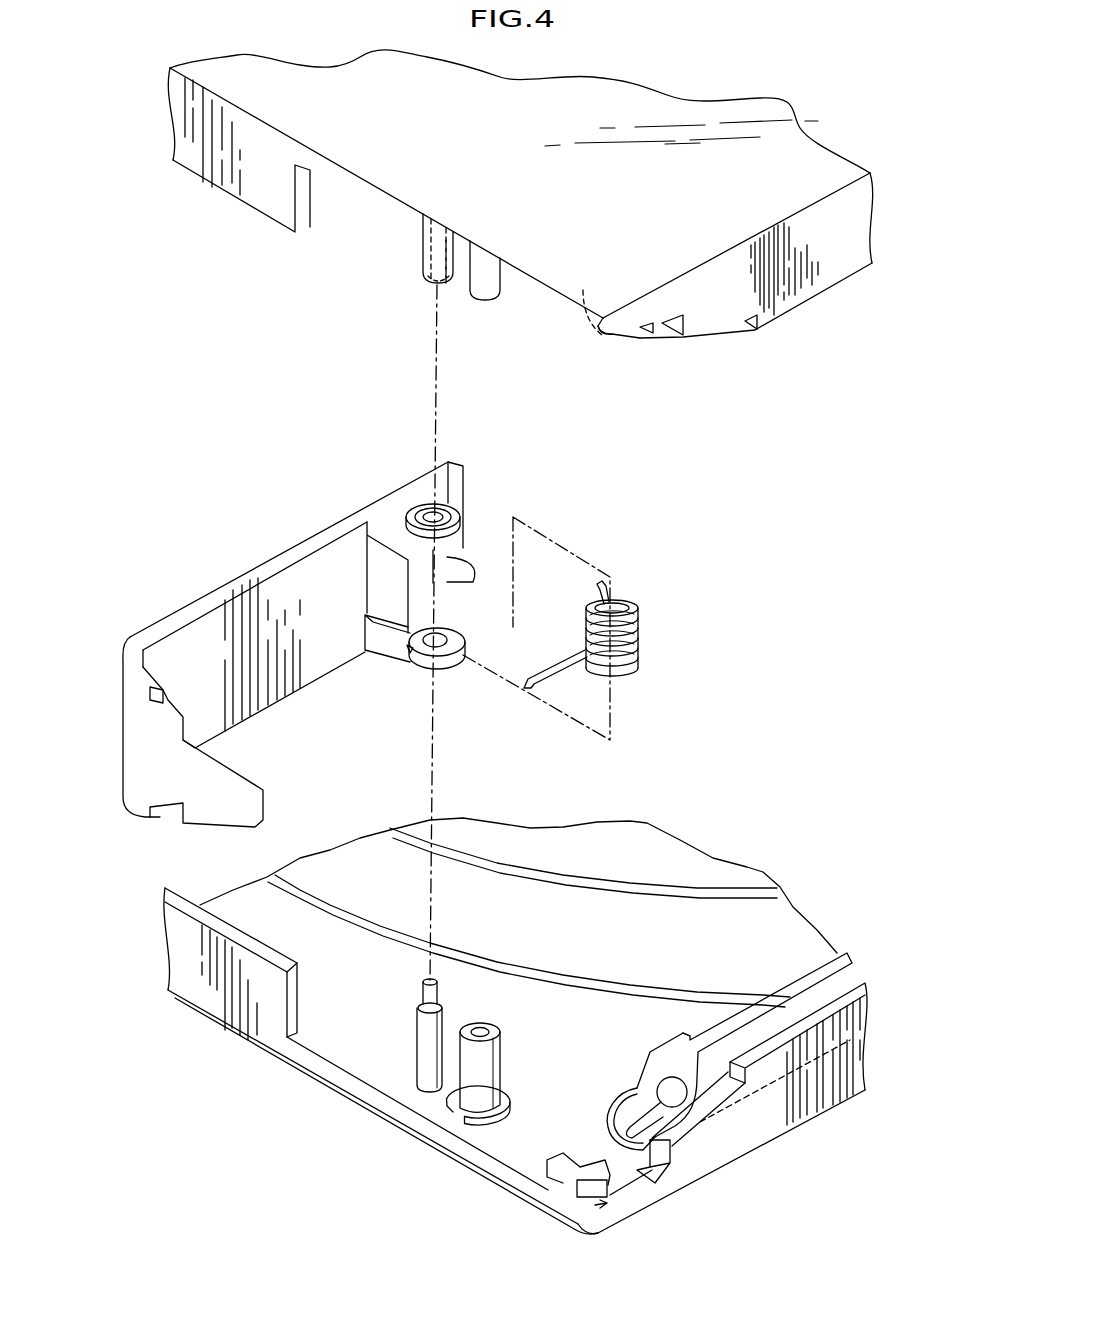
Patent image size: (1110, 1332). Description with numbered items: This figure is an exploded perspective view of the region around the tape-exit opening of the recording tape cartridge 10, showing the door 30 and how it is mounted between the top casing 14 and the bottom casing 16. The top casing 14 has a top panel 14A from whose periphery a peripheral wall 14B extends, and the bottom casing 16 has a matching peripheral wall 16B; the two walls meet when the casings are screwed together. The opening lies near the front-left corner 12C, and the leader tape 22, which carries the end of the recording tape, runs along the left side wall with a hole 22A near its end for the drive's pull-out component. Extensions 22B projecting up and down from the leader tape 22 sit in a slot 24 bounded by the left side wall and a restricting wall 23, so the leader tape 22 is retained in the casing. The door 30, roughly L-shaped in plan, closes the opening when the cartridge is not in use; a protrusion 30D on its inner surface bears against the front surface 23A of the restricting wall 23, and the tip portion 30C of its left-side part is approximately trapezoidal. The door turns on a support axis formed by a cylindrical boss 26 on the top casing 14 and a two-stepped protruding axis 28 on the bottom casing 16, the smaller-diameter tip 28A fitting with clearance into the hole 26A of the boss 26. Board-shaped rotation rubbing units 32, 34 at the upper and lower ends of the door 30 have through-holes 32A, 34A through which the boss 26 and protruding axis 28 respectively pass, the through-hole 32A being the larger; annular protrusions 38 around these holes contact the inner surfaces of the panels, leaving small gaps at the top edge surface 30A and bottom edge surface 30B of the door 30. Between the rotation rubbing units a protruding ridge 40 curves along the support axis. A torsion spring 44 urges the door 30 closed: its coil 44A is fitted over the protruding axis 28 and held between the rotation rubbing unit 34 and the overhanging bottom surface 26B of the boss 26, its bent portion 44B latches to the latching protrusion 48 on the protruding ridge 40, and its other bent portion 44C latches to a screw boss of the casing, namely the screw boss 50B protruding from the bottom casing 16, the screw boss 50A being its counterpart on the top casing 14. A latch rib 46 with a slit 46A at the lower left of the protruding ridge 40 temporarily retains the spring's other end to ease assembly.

The recording tape cartridge 10 is at (751, 78).
The corner 12C is at (627, 333).
The top casing 14 is at (828, 147).
The top panel 14A is at (603, 108).
The peripheral wall 14B is at (273, 193).
The bottom casing 16 is at (800, 1128).
The peripheral wall 16B is at (222, 1005).
The leader tape 22 is at (848, 980).
The hole 22A is at (672, 1125).
The extensions 22B is at (680, 1045).
The restricting wall 23 is at (594, 1184).
The front surface 23A is at (556, 1175).
The slot 24 is at (585, 330).
The boss 26 is at (420, 256).
The hole 26A is at (427, 288).
The bottom surface 26B is at (442, 288).
The protruding axis 28 is at (420, 1038).
The tip 28A is at (440, 990).
The door 30 is at (125, 755).
The top edge surface 30A is at (246, 582).
The bottom edge surface 30B is at (245, 720).
The tip portion 30C is at (265, 803).
The protrusion 30D is at (178, 655).
The rotation rubbing unit 32 is at (463, 521).
The through-hole 32A is at (455, 500).
The rotation rubbing unit 34 is at (456, 665).
The through-hole 34A is at (452, 640).
The annular protrusions 38 is at (418, 507).
The protruding ridge 40 is at (388, 575).
The torsion spring 44 is at (587, 628).
The coil 44A is at (640, 612).
The bent portion 44B is at (600, 591).
The bent portion 44C is at (527, 667).
The latch rib 46 is at (388, 652).
The slit 46A is at (411, 655).
The latching protrusion 48 is at (468, 562).
The upper screw boss 50A is at (505, 301).
The screw boss 50B is at (498, 1062).